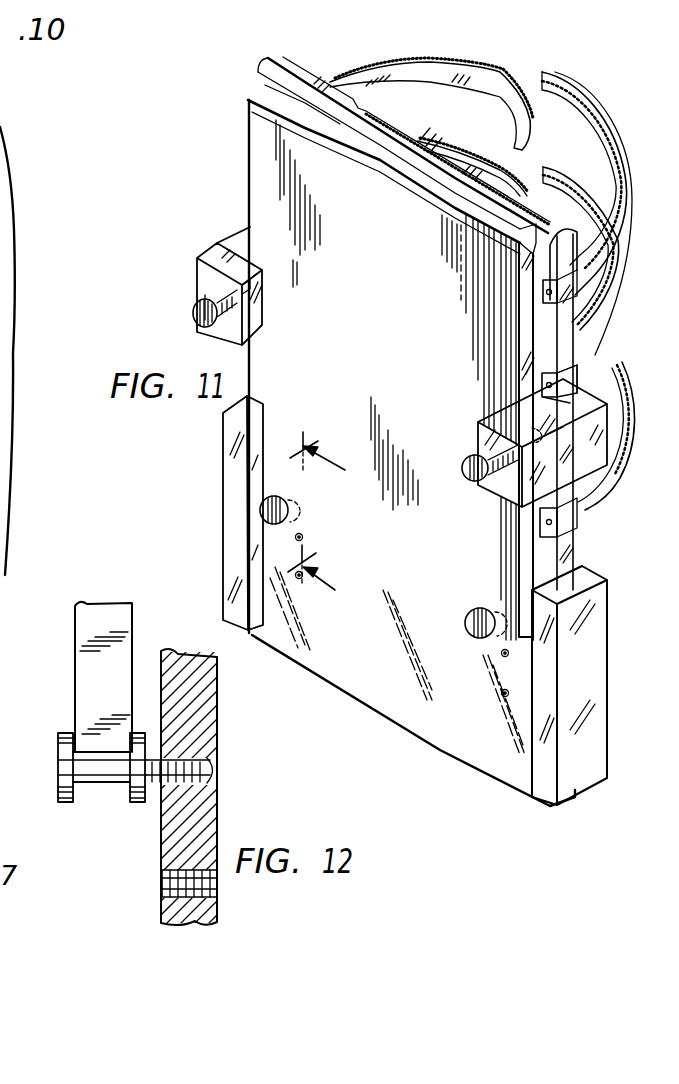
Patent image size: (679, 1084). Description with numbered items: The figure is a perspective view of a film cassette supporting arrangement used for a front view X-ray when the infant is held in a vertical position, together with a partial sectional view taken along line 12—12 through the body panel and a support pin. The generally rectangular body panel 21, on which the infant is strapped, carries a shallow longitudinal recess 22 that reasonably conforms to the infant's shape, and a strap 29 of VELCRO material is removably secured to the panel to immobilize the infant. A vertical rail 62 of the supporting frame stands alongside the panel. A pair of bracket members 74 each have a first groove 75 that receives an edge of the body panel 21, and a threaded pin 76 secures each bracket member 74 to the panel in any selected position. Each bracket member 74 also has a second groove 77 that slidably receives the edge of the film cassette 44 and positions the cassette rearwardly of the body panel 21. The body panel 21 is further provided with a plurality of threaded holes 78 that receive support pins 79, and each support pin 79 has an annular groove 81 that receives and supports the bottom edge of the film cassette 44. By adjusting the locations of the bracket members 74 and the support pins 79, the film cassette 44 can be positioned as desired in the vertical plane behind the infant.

In FIG. 11, the section line for FIG. 12 is at (329, 520).
In FIG. 11, the body panel 21 is at (548, 230).
In FIG. 12, the body panel 21 is at (208, 722).
In FIG. 11, the shallow longitudinal recess 22 is at (370, 113).
In FIG. 11, the strap 29 is at (598, 285).
In FIG. 11, the film cassette 44 is at (414, 281).
In FIG. 12, the film cassette 44 is at (108, 627).
In FIG. 11, the vertical rail 62 is at (607, 592).
In FIG. 11, the bracket member 74 is at (226, 245).
In FIG. 11, the first groove 75 is at (605, 398).
In FIG. 11, the threaded pin 76 is at (197, 318).
In FIG. 11, the second groove 77 is at (275, 252).
In FIG. 11, the threaded hole 78 is at (299, 580).
In FIG. 12, the threaded hole 78 is at (218, 780).
In FIG. 11, the support pin 79 is at (262, 510).
In FIG. 12, the support pin 79 is at (137, 805).
In FIG. 12, the annular groove 81 is at (100, 786).